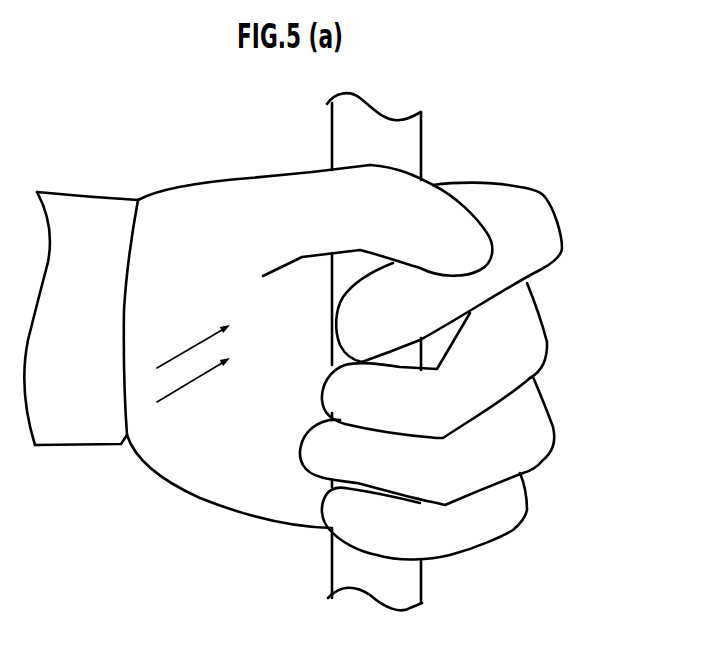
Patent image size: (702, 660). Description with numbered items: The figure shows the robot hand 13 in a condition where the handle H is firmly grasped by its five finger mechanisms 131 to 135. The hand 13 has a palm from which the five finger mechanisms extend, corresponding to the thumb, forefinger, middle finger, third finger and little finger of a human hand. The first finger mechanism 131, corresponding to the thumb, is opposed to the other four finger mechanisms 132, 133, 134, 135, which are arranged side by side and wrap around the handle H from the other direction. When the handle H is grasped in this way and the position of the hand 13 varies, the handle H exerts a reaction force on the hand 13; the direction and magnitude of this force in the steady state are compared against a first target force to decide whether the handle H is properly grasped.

The hand 13 is at (512, 118).
The first finger mechanism 131 is at (255, 188).
The finger mechanism 132 is at (545, 215).
The finger mechanism 133 is at (533, 332).
The finger mechanism 134 is at (542, 418).
The finger mechanism 135 is at (518, 510).
The handle H is at (412, 147).